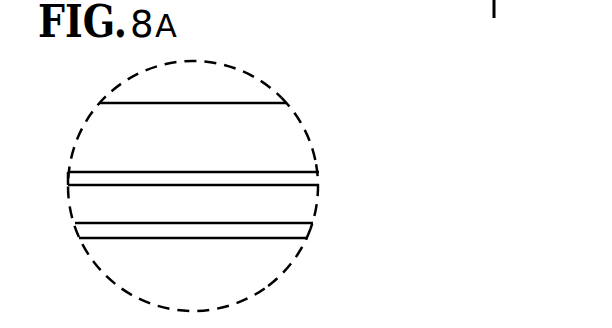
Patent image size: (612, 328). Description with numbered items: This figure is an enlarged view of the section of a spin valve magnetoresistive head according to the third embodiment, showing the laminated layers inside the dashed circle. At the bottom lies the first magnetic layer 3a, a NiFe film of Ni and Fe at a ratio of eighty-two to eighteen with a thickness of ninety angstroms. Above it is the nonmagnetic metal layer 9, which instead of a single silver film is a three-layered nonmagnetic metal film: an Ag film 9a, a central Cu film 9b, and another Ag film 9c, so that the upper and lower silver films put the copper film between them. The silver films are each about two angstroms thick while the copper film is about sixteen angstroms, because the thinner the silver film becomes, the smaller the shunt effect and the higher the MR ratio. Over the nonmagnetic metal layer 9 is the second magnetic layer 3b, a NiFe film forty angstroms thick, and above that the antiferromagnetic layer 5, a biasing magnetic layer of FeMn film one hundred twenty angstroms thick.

The antiferromagnetic layer 5 is at (245, 73).
The first magnetic layer 3a is at (287, 262).
The second magnetic layer 3b is at (305, 130).
The nonmagnetic metal layer 9 is at (262, 215).
The Ag film 9a is at (240, 249).
The Cu film 9b is at (303, 208).
The Ag film 9c is at (320, 177).